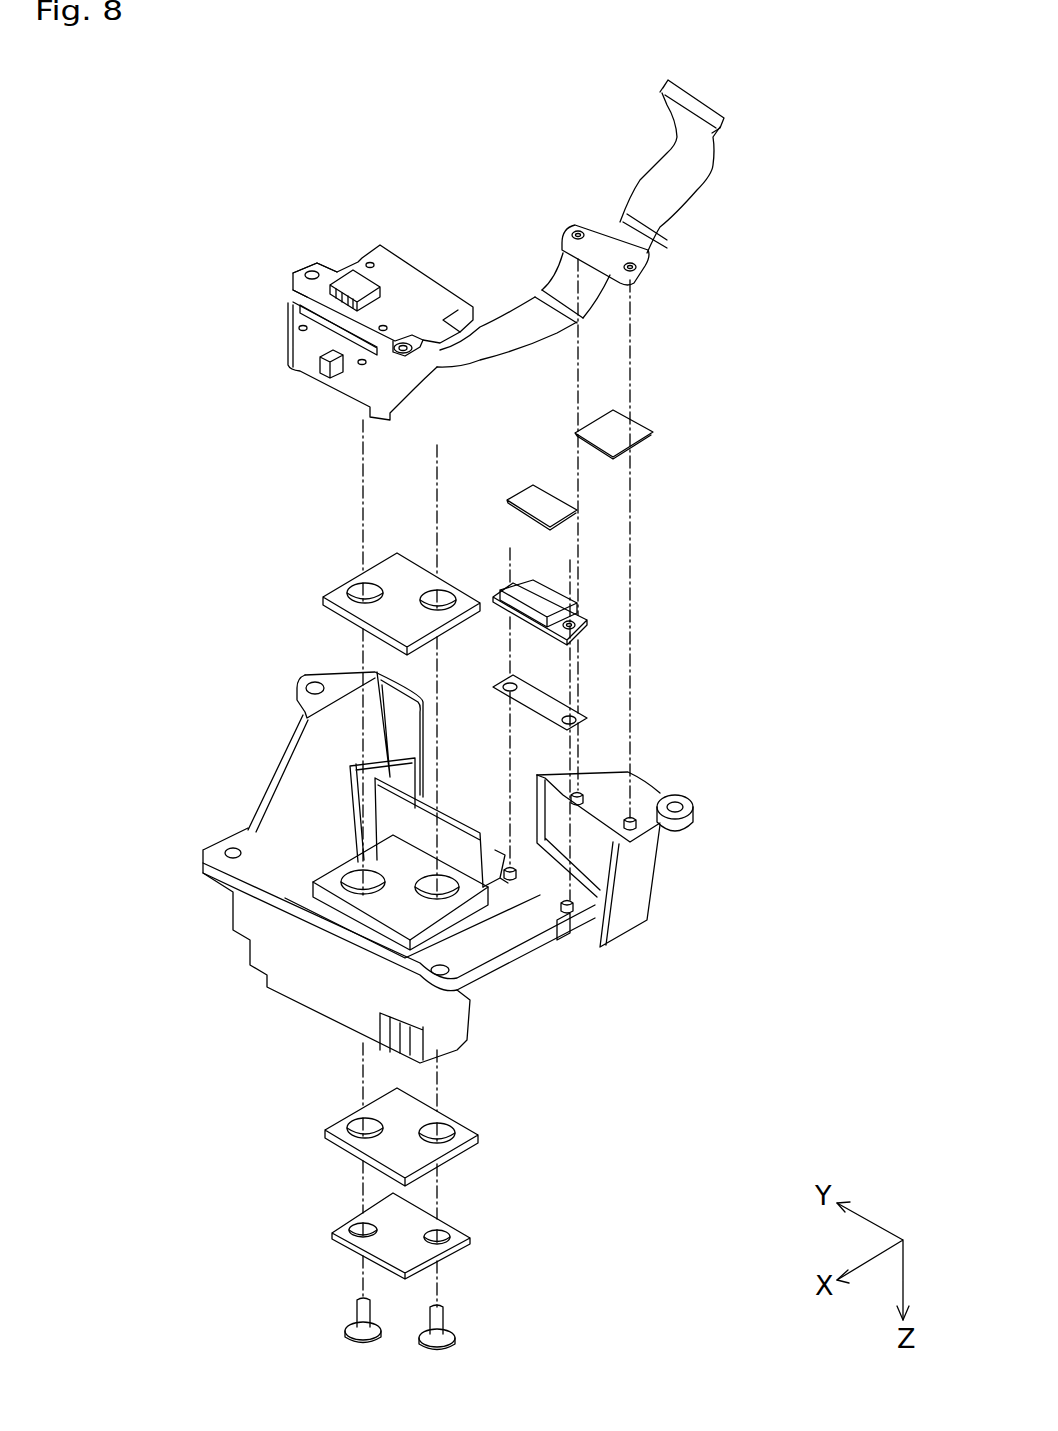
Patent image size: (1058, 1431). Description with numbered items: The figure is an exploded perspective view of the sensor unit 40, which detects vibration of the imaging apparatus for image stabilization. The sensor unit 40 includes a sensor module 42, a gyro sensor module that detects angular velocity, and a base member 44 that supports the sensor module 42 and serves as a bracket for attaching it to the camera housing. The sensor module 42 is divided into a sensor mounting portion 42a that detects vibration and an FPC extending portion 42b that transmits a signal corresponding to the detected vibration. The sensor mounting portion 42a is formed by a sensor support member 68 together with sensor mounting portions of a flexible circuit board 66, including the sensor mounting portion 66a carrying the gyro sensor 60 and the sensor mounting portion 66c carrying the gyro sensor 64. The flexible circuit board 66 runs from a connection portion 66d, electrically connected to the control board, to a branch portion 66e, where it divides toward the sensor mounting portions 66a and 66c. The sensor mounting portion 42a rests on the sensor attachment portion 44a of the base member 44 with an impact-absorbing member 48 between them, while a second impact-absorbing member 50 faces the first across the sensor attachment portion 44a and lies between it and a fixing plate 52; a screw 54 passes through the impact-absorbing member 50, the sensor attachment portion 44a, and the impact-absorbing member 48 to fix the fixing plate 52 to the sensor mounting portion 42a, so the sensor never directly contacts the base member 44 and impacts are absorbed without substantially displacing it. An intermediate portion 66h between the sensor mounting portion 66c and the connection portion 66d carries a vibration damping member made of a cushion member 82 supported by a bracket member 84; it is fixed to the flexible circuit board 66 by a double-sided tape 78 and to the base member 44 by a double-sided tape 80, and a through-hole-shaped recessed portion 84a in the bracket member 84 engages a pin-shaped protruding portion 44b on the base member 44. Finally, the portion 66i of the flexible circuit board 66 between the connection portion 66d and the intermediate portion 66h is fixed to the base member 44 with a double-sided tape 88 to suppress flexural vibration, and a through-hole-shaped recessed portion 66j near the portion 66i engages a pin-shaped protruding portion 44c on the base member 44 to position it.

The sensor unit 40 is at (793, 342).
The sensor module 42 is at (377, 176).
The sensor mounting portion 42a is at (243, 348).
The FPC extending portion 42b is at (619, 118).
The base member 44 is at (285, 750).
The sensor attachment portion 44a is at (330, 870).
The positioning protruding portion 44b is at (510, 866).
The protruding portion 44c is at (580, 793).
The impact-absorbing member 48 is at (335, 593).
The impact-absorbing member 50 is at (335, 1125).
The fixing plate 52 is at (460, 1232).
The screw 54 is at (356, 1313).
The gyro sensor 60 is at (320, 370).
The gyro sensor 64 is at (350, 280).
The flexible circuit board 66 is at (695, 188).
The sensor mounting portion 66a is at (327, 383).
The sensor mounting portion 66c is at (417, 283).
The connection portion 66d is at (676, 93).
The branch portion 66e is at (457, 343).
The intermediate portion 66h is at (523, 303).
The portion of the flexible circuit board 66i is at (603, 240).
The recessed portion 66j is at (578, 235).
The sensor support member 68 is at (303, 270).
The double-sided tape 78 is at (530, 498).
The double-sided tape 80 is at (545, 710).
The cushion member 82 is at (570, 595).
The bracket member 84 is at (595, 627).
The positioning recessed portion 84a is at (500, 583).
The double-sided tape 88 is at (640, 435).